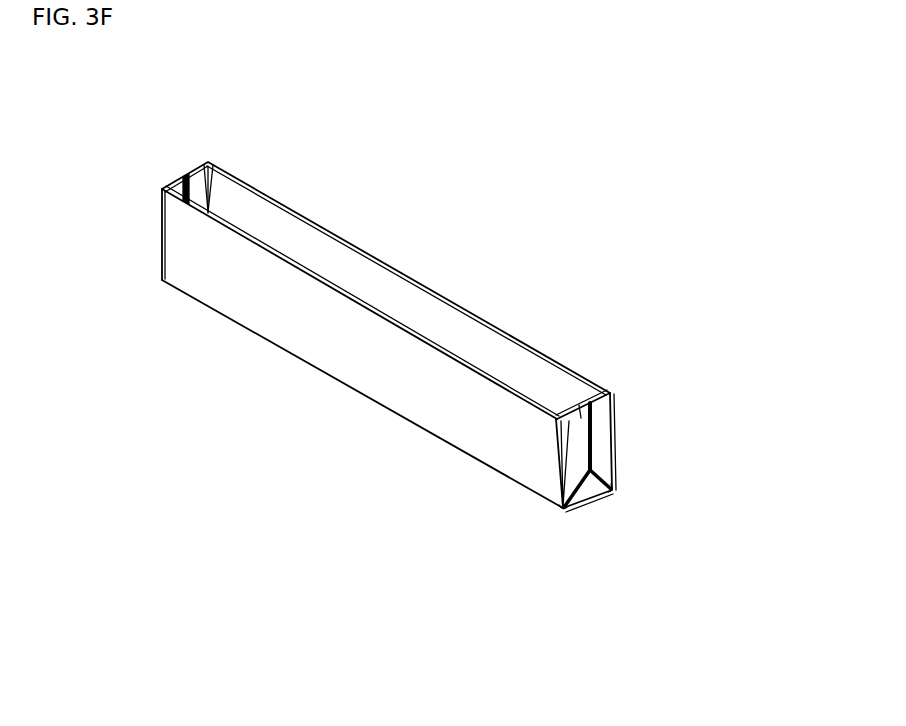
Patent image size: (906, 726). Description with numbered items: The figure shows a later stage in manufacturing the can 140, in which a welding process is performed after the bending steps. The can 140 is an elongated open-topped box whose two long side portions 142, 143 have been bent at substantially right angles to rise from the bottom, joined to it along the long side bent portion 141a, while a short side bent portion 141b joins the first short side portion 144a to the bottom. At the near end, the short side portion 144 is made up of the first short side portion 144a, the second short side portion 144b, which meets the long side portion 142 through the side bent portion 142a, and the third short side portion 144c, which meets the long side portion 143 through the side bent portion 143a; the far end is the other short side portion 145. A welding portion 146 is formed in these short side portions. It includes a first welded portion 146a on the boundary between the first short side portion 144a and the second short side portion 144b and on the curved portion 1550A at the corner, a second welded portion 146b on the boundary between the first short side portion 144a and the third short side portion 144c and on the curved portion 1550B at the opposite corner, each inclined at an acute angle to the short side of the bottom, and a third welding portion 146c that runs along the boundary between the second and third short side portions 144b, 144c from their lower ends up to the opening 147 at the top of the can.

The can 140 is at (428, 222).
The long side bent portion 141a is at (357, 398).
The short side bent portion 141b is at (586, 506).
The long side portion 142 is at (308, 347).
The side bent portion 142a is at (160, 218).
The long side portion 143 is at (485, 335).
The side bent portion 143a is at (208, 162).
The short side portion 144 is at (625, 409).
The first short side portion 144a is at (602, 496).
The second short side portion 144b is at (577, 412).
The third short side portion 144c is at (597, 402).
The short side portion 145 is at (181, 171).
The welding portion 146 is at (676, 459).
The first welded portion 146a is at (600, 452).
The second welded portion 146b is at (605, 470).
The third welding portion 146c is at (594, 432).
The opening 147 is at (290, 242).
The curved portion 1550A is at (563, 514).
The curved portion 1550B is at (620, 490).